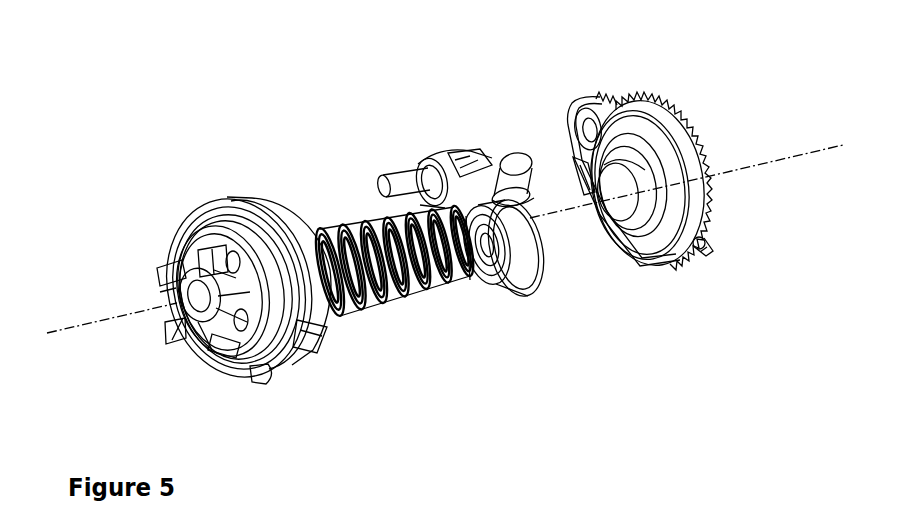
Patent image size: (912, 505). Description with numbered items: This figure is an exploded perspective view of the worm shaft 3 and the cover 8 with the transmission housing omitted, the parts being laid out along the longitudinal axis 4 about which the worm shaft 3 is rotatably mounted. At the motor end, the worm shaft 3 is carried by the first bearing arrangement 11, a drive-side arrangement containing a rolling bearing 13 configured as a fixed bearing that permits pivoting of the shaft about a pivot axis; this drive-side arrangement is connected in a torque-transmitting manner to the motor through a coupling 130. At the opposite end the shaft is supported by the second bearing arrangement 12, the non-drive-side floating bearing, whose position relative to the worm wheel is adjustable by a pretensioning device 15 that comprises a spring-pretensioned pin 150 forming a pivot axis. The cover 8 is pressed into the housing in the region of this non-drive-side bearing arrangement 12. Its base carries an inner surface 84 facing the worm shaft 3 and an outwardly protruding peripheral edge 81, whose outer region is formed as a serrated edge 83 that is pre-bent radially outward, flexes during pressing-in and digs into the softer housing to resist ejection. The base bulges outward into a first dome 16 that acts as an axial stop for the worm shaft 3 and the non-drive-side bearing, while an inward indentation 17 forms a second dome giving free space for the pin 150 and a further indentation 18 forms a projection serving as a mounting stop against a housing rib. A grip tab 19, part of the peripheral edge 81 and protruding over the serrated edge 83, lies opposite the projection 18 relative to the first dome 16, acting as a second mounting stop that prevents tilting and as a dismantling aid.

The worm shaft 3 is at (385, 302).
The longitudinal axis 4 is at (778, 162).
The cover 8 is at (624, 82).
The first bearing arrangement 11 is at (288, 232).
The second bearing arrangement 12 is at (492, 297).
The rolling bearing 13 is at (227, 213).
The pretensioning device 15 is at (452, 155).
The first dome 16 is at (630, 197).
The indentation 17 is at (576, 108).
The indentation 18 is at (582, 187).
The grip tab 19 is at (708, 247).
The peripheral edge 81 is at (700, 214).
The serrated edge 83 is at (695, 140).
The inner surface 84 is at (657, 103).
The coupling 130 is at (176, 234).
The spring-pretensioned pin 150 is at (481, 153).